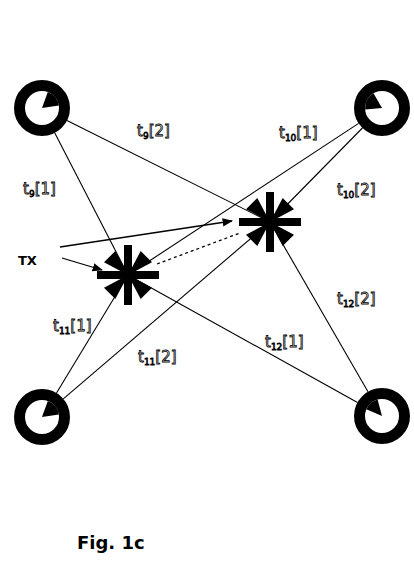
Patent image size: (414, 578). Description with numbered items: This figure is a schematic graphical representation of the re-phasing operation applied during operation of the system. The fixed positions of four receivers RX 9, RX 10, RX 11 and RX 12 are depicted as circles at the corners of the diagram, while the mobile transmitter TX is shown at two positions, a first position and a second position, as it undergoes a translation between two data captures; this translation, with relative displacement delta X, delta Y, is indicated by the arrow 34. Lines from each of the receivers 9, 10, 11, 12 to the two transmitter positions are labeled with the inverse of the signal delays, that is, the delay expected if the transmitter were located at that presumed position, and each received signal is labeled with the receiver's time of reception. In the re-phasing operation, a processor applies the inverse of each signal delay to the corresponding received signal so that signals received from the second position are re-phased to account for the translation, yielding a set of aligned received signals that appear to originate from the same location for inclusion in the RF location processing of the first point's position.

The arrow 34 is at (182, 268).
The receiver 9 is at (63, 77).
The receiver 10 is at (352, 76).
The receiver 11 is at (64, 445).
The receiver 12 is at (332, 446).